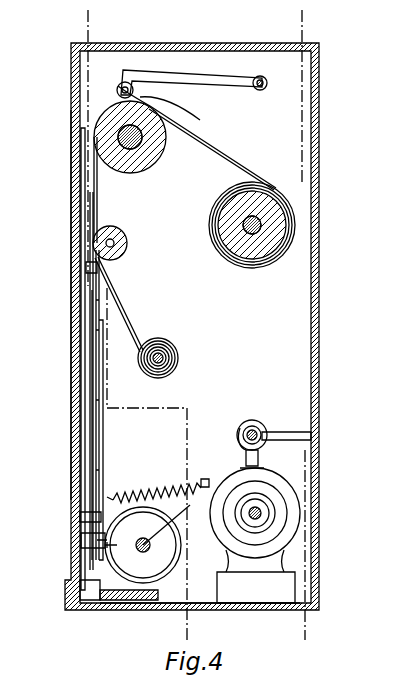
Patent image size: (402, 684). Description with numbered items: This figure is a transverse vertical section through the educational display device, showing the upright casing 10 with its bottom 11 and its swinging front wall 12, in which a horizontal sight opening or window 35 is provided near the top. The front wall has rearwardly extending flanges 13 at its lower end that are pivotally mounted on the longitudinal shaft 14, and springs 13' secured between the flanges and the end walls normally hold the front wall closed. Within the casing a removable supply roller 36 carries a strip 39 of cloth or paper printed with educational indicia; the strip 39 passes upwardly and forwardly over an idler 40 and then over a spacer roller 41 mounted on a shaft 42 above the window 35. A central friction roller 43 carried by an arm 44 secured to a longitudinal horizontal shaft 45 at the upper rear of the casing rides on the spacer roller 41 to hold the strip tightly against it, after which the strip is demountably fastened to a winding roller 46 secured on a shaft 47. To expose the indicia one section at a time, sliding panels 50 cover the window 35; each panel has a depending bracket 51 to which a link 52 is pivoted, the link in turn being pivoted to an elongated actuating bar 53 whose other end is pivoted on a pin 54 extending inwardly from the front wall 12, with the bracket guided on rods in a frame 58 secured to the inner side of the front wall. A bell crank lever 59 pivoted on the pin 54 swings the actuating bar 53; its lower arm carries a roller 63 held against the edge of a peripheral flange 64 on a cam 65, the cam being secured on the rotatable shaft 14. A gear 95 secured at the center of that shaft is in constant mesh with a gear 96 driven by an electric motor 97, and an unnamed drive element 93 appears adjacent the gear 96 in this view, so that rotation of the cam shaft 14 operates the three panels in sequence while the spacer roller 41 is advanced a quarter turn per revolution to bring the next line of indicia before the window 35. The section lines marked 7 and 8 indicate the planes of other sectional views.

The section line 7- 7 is at (292, 28).
The section line 8- 8 is at (78, 25).
The upright casing 10 is at (319, 286).
The bottom 11 is at (122, 611).
The front wall 12 is at (72, 398).
The flanges 13 is at (100, 553).
The springs 13' is at (158, 481).
The longitudinal shaft 14 is at (169, 523).
The sight opening or window 35 is at (72, 160).
The supply roller 36 is at (170, 356).
The strip 39 is at (208, 148).
The idler 40 is at (118, 248).
The spacer roller 41 is at (150, 158).
The shaft 42 is at (150, 120).
The central friction roller 43 is at (116, 92).
The arm 44 is at (218, 80).
The longitudinal horizontal shaft 45 is at (267, 84).
The winding roller 46 is at (276, 216).
The shaft 47 is at (254, 234).
The doors or panels 50 is at (80, 200).
The depending bracket 51 is at (85, 266).
The link 52 is at (98, 327).
The actuating bar 53 is at (103, 393).
The pin 54 is at (80, 518).
The frame 58 is at (92, 300).
The bell crank lever 59 is at (81, 543).
The roller 63 is at (140, 552).
The peripheral flange 64 is at (96, 578).
The cam 65 is at (180, 548).
The idler pulley 93 is at (256, 421).
The gear 95 is at (243, 430).
The gear 96 is at (268, 440).
The electric motor 97 is at (285, 510).